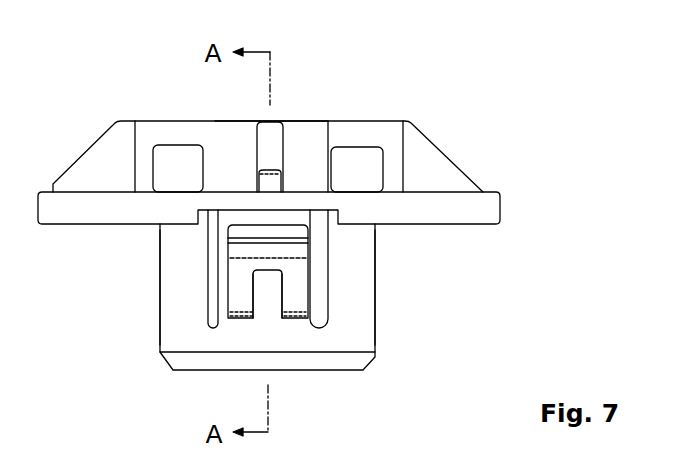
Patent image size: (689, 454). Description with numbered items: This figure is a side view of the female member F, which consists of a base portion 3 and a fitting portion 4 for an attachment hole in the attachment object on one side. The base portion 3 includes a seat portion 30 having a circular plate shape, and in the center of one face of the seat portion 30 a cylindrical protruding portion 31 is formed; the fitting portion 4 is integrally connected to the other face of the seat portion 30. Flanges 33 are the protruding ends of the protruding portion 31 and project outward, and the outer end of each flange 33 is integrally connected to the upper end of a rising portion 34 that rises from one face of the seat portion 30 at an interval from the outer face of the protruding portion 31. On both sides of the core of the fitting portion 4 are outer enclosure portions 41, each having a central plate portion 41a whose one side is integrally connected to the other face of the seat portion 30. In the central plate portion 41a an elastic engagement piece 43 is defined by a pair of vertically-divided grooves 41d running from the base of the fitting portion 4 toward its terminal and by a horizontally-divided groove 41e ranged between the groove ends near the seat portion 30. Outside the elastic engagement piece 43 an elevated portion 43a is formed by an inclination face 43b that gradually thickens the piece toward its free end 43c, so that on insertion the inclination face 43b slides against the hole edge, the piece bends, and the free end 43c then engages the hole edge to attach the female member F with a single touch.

The base portion 3 is at (453, 170).
The seat portion 30 is at (490, 212).
The protruding portion 31 is at (313, 130).
The flange 33 is at (168, 128).
The rising portion 34 is at (142, 167).
The fitting portion 4 is at (375, 323).
The outer enclosure portion 41 is at (168, 307).
The central plate portion 41a is at (343, 303).
The vertically-divided groove 41d is at (217, 270).
The horizontally-divided groove 41e is at (280, 217).
The elastic engagement piece 43 is at (238, 270).
The elevated portion 43a is at (288, 248).
The inclination face 43b is at (242, 293).
The free end 43c is at (298, 225).
The female member F is at (425, 98).